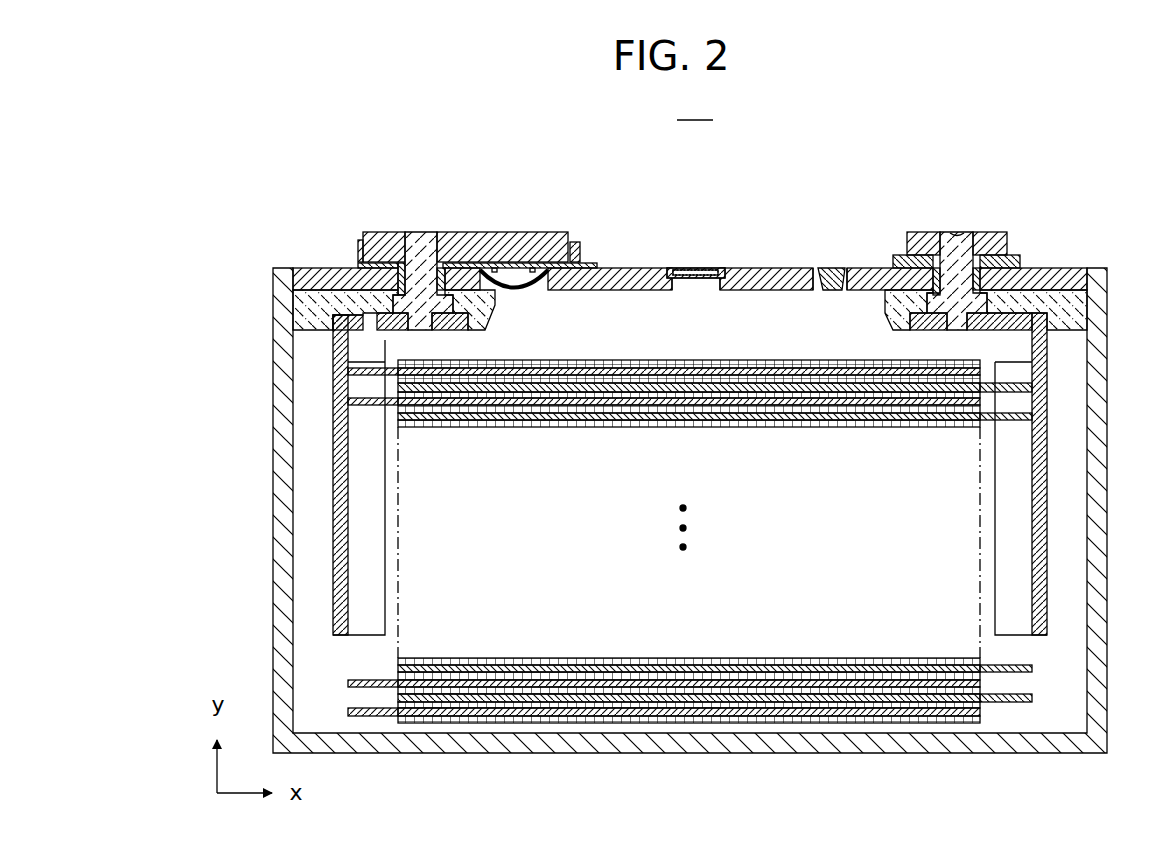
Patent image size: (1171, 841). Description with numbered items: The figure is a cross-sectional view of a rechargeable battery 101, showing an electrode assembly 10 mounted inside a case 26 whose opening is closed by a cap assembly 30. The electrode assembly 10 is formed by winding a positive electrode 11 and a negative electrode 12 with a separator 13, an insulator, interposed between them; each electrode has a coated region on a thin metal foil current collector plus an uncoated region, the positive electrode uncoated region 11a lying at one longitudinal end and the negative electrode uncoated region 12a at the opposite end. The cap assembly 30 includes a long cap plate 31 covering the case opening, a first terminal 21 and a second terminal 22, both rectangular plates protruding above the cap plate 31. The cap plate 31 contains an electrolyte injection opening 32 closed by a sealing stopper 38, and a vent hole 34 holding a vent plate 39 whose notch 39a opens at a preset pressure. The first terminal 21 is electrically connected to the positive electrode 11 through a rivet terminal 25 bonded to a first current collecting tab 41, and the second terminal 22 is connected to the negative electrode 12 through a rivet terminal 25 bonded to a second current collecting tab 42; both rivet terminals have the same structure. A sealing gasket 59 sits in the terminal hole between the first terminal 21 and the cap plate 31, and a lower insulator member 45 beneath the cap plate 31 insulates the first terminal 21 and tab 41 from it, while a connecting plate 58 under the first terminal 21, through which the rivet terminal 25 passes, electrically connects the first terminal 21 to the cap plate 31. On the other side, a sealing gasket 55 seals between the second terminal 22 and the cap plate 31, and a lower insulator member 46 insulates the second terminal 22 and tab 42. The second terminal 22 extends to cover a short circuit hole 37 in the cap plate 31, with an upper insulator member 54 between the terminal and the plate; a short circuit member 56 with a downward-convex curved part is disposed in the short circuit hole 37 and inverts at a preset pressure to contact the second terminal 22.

The rechargeable battery 101 is at (695, 107).
The electrode assembly 10 is at (689, 585).
The positive electrode 11 is at (887, 697).
The positive electrode uncoated region 11a is at (1013, 703).
The negative electrode 12 is at (492, 720).
The negative electrode uncoated region 12a is at (365, 712).
The separator 13 is at (693, 683).
The first terminal 21 is at (990, 240).
The second terminal 22 is at (386, 245).
The rivet terminal 25 is at (427, 250).
The case 26 is at (1100, 545).
The cap assembly 30 is at (655, 266).
The cap plate 31 is at (1067, 278).
The electrolyte injection opening 32 is at (832, 291).
The vent hole 34 is at (692, 291).
The short circuit hole 37 is at (484, 262).
The sealing stopper 38 is at (834, 268).
The vent plate 39 is at (717, 268).
The notch 39a is at (693, 268).
The first current collecting tab 41 is at (1040, 372).
The second current collecting tab 42 is at (333, 385).
The lower insulator member 45 is at (1065, 310).
The lower insulator member 46 is at (320, 300).
The upper insulator member 54 is at (577, 250).
The sealing gasket 55 is at (352, 280).
The short circuit member 56 is at (518, 282).
The connecting plate 58 is at (1018, 262).
The sealing gasket 59 is at (927, 282).